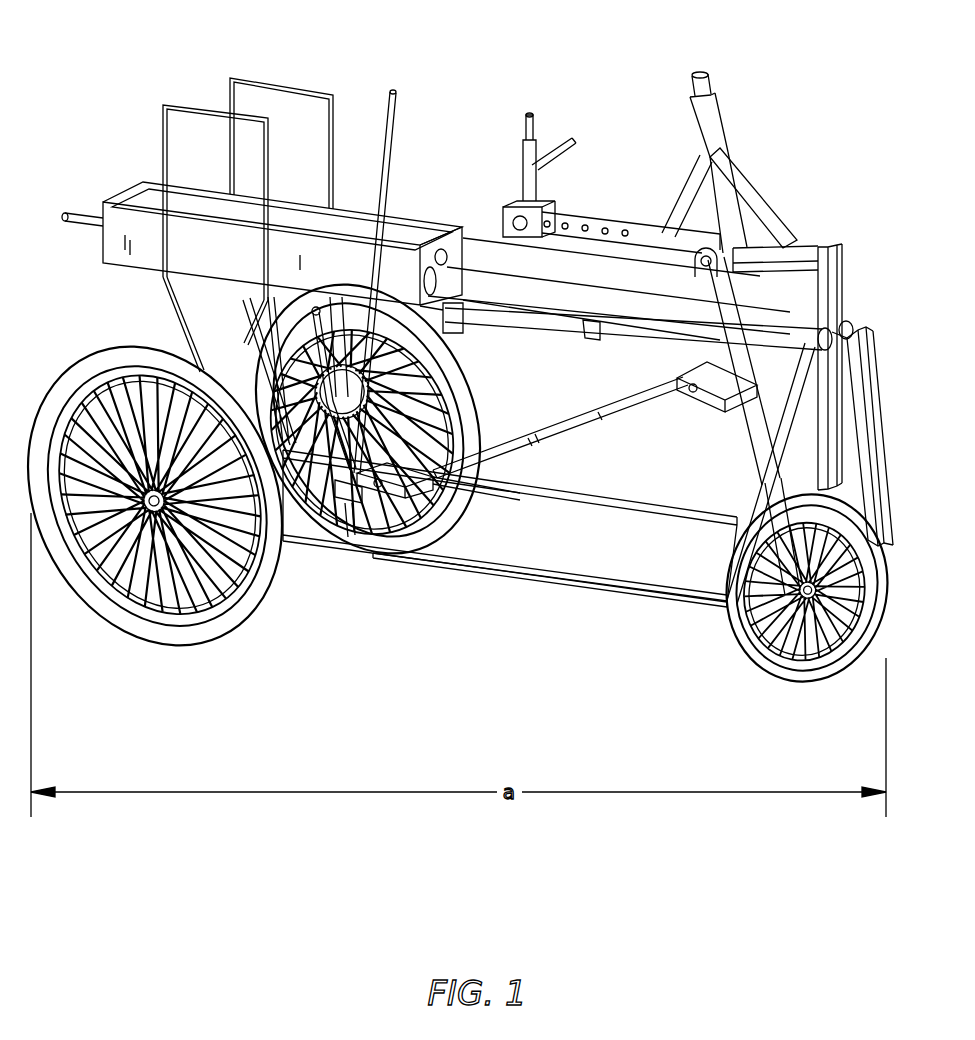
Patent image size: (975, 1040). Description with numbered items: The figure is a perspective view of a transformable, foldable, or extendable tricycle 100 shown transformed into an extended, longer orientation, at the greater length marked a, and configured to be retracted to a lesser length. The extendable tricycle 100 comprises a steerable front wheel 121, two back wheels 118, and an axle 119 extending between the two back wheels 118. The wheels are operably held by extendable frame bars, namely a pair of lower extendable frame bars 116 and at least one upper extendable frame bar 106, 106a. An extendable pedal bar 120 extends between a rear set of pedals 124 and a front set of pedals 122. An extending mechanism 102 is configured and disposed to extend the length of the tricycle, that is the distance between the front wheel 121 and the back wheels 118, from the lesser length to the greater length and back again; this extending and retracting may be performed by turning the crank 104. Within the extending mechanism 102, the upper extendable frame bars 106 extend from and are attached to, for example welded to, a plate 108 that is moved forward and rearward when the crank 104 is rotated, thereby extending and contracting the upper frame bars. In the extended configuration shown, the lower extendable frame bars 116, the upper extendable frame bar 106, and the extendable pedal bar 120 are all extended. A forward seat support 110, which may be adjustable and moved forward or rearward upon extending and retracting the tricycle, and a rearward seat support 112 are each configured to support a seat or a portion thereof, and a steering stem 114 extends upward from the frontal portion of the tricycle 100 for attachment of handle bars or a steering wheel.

The extendable tricycle 100 is at (482, 85).
The extending mechanism 102 is at (120, 250).
The crank 104 is at (77, 213).
The upper extendable frame bar 106 is at (552, 287).
The upper extendable frame bar 106a is at (600, 322).
The plate 108 is at (430, 226).
The forward seat support 110 is at (532, 140).
The rearward seat support 112 is at (277, 83).
The steering stem 114 is at (712, 130).
The lower extendable frame bar 116 is at (600, 590).
The back wheel 118 is at (228, 628).
The axle 119 is at (207, 473).
The extendable pedal bar 120 is at (552, 428).
The front wheel 121 is at (880, 605).
The front set of pedals 122 is at (712, 392).
The rear set of pedals 124 is at (450, 512).